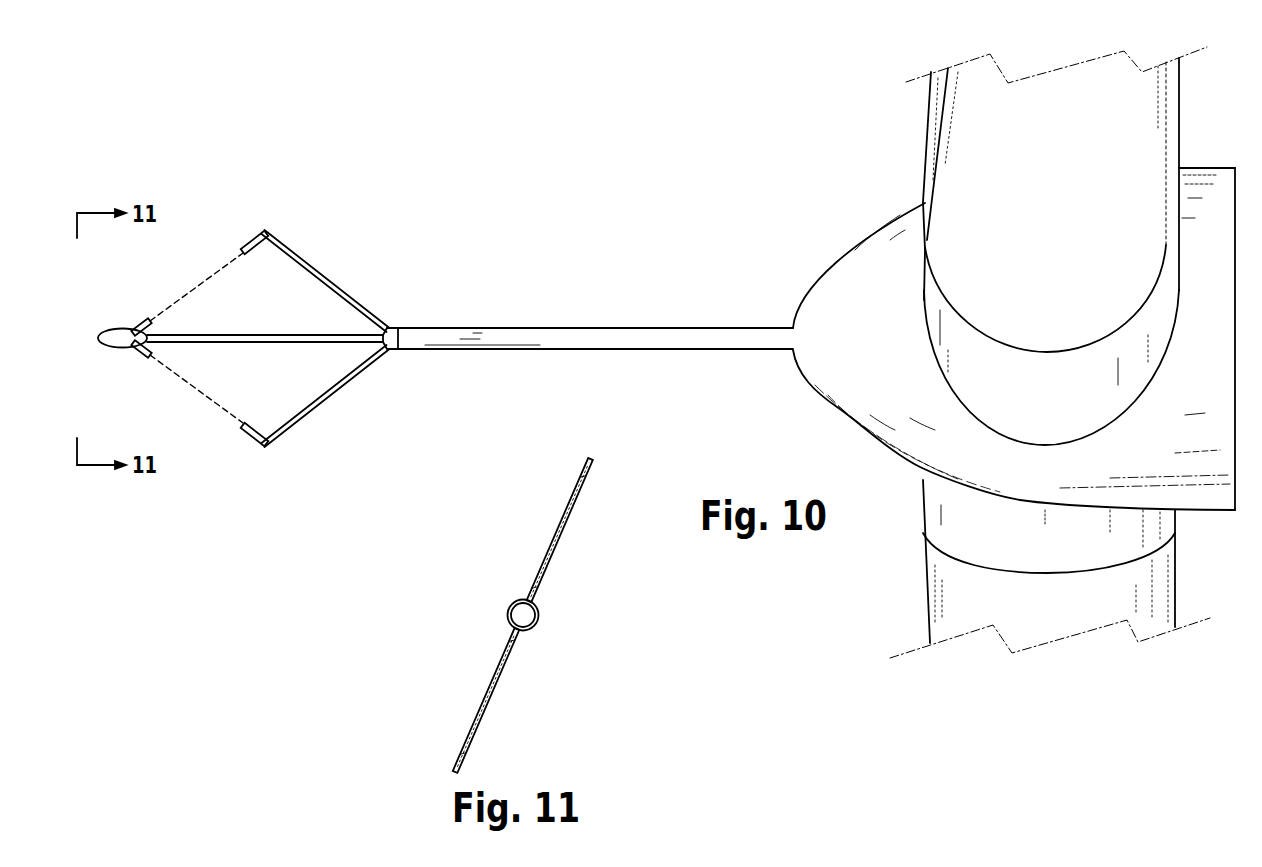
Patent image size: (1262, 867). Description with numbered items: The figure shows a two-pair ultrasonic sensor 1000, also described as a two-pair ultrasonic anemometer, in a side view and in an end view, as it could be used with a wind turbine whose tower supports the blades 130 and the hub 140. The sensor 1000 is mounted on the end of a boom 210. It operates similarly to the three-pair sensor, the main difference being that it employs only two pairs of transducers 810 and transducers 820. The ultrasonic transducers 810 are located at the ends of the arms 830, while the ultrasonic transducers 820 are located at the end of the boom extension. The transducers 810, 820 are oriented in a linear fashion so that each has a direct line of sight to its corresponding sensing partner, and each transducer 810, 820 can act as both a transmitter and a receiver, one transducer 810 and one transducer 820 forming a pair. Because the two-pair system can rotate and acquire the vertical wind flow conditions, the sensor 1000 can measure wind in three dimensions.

In FIG. 10, the blades 130 is at (987, 146).
In FIG. 10, the hub 140 is at (867, 305).
In FIG. 10, the boom 210 is at (560, 343).
In FIG. 10, the two-pair ultrasonic sensor 1000 is at (292, 213).
In FIG. 11, the two-pair ultrasonic sensor 1000 is at (474, 542).
In FIG. 10, the ultrasonic transducers 810 is at (243, 250).
In FIG. 10, the ultrasonic transducers 820 is at (137, 325).
In FIG. 10, the arms 830 is at (313, 272).
In FIG. 11, the arms 830 is at (553, 540).